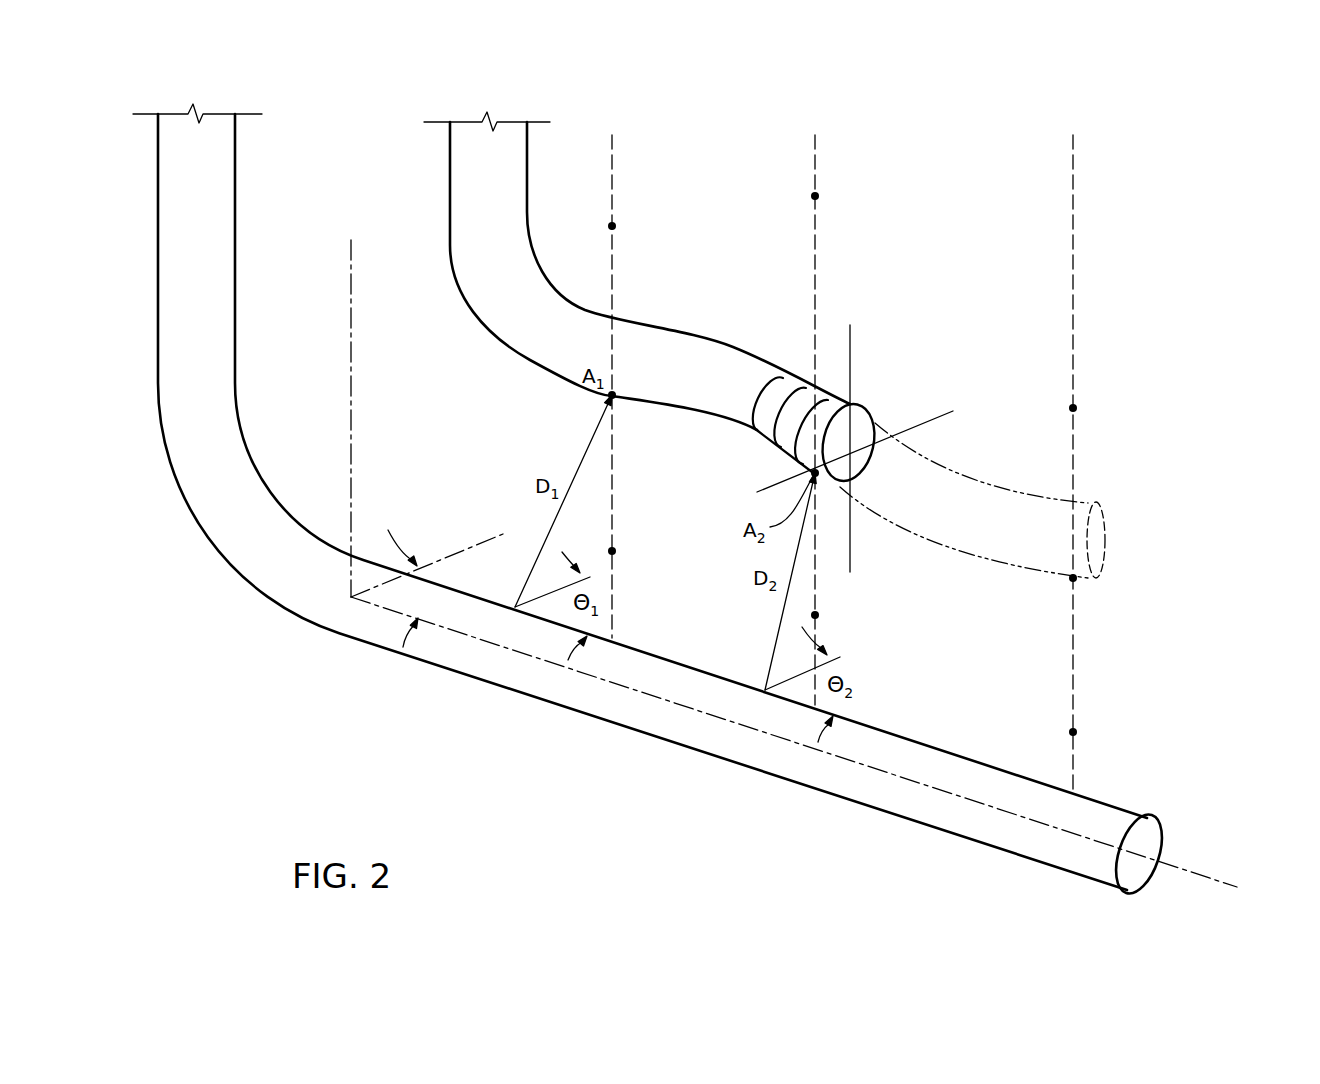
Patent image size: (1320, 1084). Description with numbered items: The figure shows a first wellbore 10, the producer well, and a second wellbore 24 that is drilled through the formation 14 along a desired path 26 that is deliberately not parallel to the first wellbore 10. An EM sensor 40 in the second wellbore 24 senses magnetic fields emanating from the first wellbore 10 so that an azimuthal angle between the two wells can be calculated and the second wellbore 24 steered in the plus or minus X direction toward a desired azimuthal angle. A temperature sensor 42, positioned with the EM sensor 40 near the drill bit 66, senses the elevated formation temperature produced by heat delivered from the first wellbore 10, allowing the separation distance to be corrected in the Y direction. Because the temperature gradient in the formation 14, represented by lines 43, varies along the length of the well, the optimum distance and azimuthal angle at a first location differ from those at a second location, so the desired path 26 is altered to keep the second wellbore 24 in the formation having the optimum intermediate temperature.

The first wellbore 10 is at (200, 523).
The formation 14 is at (449, 410).
The second wellbore 24 is at (527, 214).
The desired path 26 is at (975, 487).
The EM sensor 40 is at (812, 394).
The temperature sensor 42 is at (767, 437).
The lines 43 is at (614, 175).
The drill bit 66 is at (862, 407).